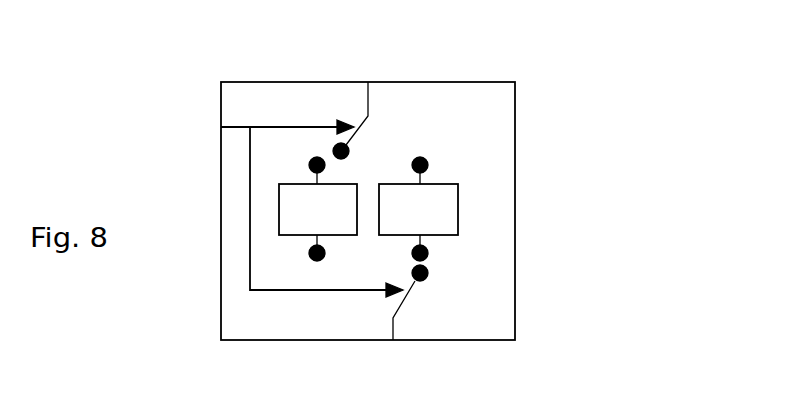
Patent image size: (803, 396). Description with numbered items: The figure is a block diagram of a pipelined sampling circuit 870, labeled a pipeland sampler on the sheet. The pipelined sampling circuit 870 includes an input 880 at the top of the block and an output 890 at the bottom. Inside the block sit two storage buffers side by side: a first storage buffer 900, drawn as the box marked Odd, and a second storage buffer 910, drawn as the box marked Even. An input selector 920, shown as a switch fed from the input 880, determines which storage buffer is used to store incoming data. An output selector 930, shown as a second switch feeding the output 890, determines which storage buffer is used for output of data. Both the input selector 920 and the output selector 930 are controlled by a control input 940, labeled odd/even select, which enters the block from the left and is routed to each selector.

The pipelined sampling circuit 870 is at (686, 75).
The input 880 is at (376, 82).
The output 890 is at (405, 340).
The first storage buffer 900 is at (350, 184).
The second storage buffer 910 is at (452, 184).
The input selector 920 is at (384, 126).
The output selector 930 is at (463, 303).
The control input 940 is at (108, 118).